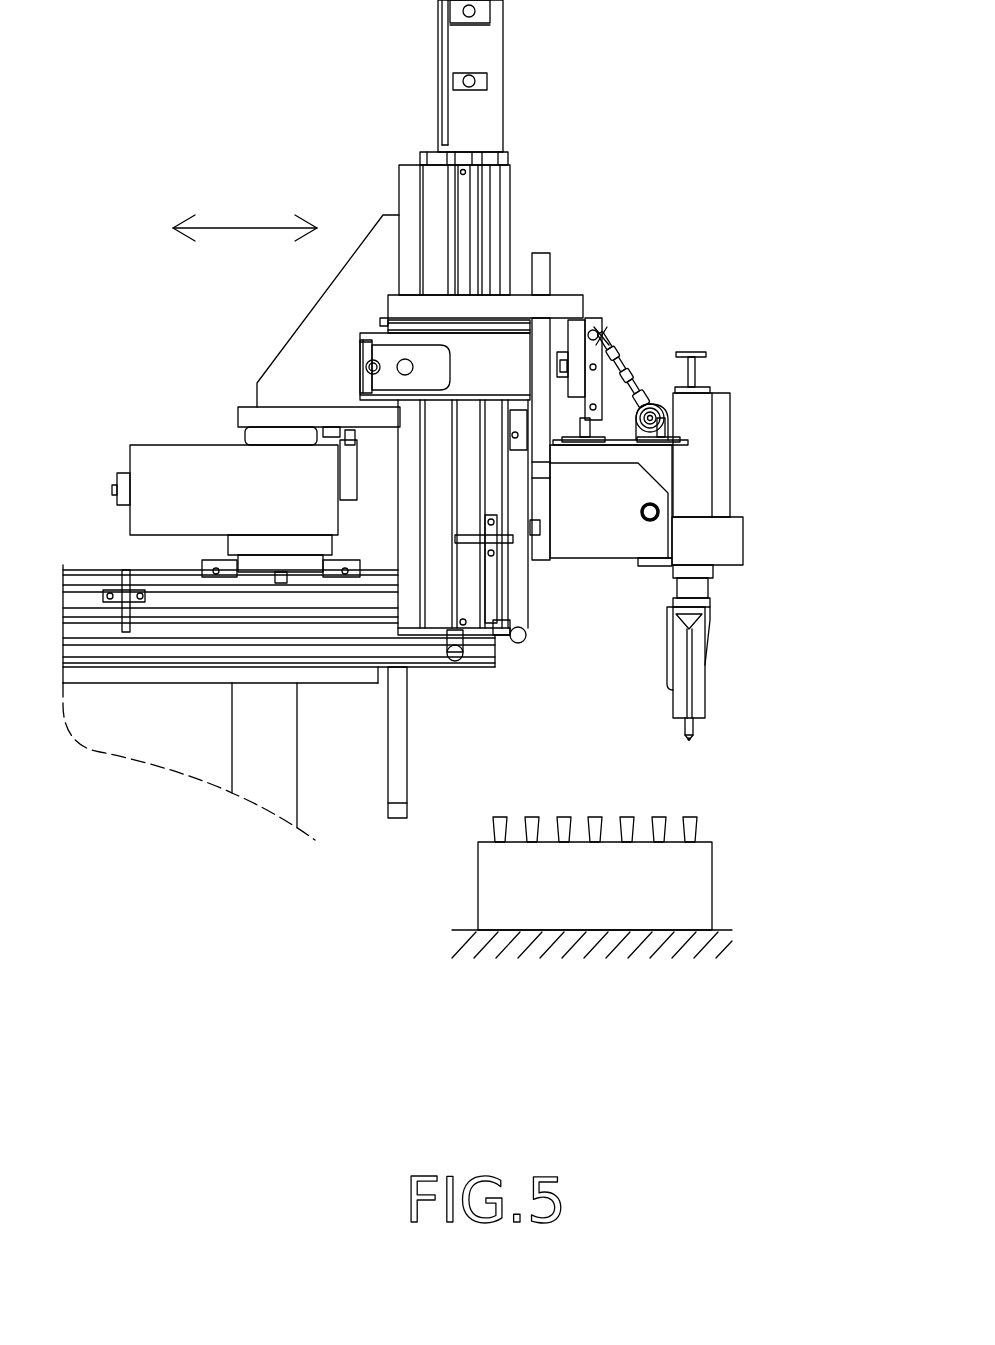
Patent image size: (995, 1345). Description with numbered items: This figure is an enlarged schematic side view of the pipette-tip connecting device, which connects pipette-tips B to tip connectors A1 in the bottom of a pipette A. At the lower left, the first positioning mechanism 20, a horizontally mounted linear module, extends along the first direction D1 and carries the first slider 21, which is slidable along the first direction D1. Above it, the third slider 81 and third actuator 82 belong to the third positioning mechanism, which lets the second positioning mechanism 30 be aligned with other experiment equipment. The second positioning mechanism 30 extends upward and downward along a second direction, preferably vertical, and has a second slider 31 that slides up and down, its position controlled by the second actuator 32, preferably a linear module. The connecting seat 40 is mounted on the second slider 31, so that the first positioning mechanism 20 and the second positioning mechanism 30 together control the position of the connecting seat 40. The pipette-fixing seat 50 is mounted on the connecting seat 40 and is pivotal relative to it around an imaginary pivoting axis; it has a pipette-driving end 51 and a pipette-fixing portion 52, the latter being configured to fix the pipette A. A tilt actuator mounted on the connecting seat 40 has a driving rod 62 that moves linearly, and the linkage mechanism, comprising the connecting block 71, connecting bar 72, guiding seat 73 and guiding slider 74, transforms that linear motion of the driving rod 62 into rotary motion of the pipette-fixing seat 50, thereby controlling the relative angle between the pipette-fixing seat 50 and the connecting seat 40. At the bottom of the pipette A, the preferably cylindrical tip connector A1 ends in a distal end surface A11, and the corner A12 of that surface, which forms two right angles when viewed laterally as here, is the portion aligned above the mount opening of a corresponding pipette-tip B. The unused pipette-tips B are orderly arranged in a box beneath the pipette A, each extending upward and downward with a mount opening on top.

The first positioning mechanism 20 is at (332, 666).
The first slider 21 is at (226, 571).
The second positioning mechanism 30 is at (512, 157).
The second slider 31 is at (515, 450).
The second actuator 32 is at (480, 50).
The connecting seat 40 is at (631, 563).
The pipette-fixing seat 50 is at (677, 468).
The pipette-driving end 51 is at (672, 412).
The pipette-fixing portion 52 is at (738, 540).
The driving rod 62 is at (558, 353).
The connecting block 71 is at (608, 340).
The connecting bar 72 is at (627, 367).
The guiding seat 73 is at (380, 322).
The guiding slider 74 is at (470, 303).
The third slider 81 is at (287, 437).
The third actuator 82 is at (197, 461).
The pipette A is at (700, 665).
The tip connector A1 is at (695, 725).
The distal end surface A11 is at (689, 740).
The corner A12 is at (697, 740).
The pipette-tip B is at (659, 820).
The first direction D1 is at (245, 212).